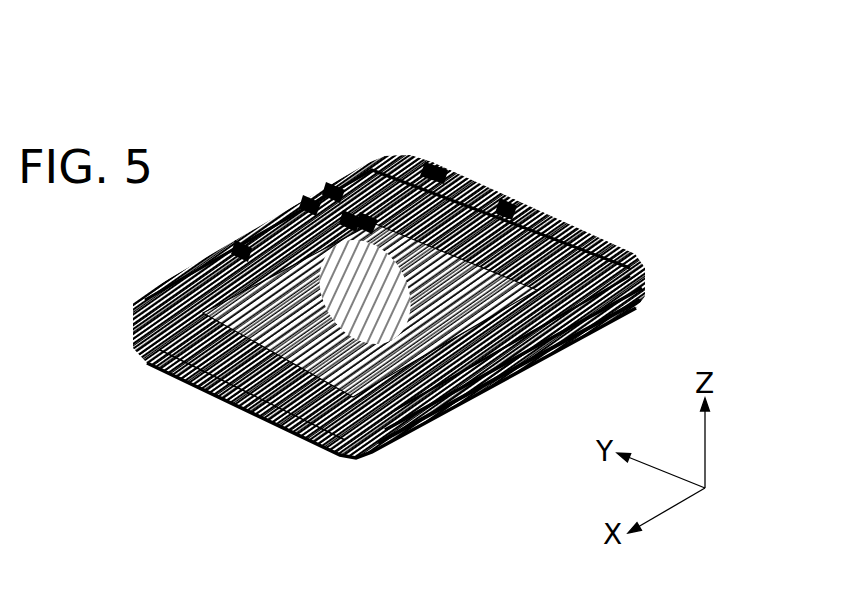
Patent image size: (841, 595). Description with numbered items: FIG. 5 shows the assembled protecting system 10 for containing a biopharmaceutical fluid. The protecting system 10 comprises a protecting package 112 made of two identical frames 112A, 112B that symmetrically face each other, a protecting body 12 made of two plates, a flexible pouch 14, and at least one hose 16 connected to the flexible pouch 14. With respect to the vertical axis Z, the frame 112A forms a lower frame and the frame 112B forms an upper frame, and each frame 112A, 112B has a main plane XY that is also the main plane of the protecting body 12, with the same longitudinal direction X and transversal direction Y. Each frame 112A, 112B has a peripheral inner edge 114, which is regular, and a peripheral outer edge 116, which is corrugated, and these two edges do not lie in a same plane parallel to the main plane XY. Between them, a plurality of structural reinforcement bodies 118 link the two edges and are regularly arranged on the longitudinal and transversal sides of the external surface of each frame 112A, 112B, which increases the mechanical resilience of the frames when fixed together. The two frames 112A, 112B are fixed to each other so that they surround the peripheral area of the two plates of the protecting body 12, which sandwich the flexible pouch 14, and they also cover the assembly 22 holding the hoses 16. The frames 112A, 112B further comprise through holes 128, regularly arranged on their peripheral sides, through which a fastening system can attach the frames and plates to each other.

The protecting system 10 is at (637, 109).
The protecting body 12 is at (487, 273).
The flexible pouch 14 is at (492, 270).
The hose 16 is at (601, 305).
The assembly for holding the hoses 22 is at (520, 366).
The protecting package 112 is at (507, 210).
The lower frame 112A is at (297, 443).
The upper frame 112B is at (435, 170).
The peripheral inner edge 114 is at (365, 222).
The peripheral outer edge 116 is at (333, 192).
The structural reinforcement bodies 118 is at (313, 202).
The through holes 128 is at (243, 249).